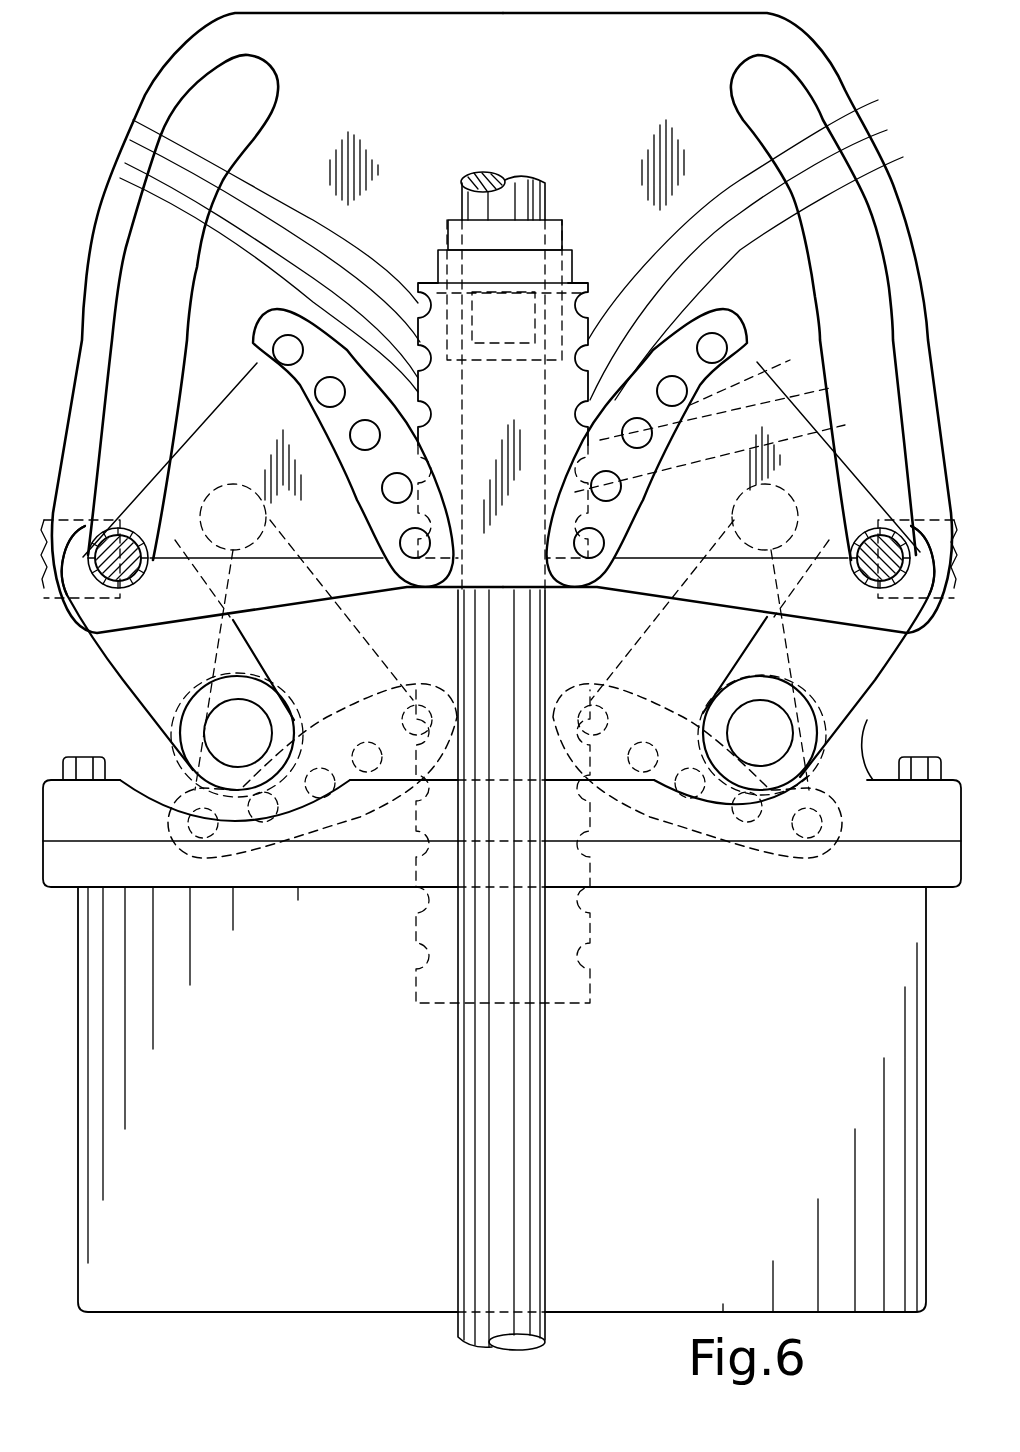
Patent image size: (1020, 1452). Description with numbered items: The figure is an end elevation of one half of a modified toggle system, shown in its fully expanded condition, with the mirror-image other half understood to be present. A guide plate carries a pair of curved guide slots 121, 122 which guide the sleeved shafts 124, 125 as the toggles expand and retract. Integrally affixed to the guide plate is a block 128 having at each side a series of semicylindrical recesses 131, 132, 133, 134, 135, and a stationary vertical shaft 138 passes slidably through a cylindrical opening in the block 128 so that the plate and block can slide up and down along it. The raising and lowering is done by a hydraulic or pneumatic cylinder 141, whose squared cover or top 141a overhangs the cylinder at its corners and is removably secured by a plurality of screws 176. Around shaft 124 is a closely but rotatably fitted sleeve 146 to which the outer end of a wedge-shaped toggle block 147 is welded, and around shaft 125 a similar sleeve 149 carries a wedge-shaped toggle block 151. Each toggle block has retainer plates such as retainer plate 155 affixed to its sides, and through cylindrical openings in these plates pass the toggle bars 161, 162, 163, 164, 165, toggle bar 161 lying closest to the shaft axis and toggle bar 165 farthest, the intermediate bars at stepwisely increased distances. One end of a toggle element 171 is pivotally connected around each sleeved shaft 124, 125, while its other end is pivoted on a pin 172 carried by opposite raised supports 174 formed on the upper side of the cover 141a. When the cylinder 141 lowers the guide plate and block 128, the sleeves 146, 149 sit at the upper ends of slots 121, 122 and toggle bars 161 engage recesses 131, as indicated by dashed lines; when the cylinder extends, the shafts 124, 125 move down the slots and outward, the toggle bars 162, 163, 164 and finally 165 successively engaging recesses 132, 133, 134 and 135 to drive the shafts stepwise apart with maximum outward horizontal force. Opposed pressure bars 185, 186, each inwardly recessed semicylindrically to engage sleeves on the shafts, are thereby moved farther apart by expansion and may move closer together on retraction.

The curved guide slot 121 is at (174, 113).
The curved guide slot 122 is at (805, 88).
The sleeved shaft 124 is at (232, 497).
The sleeved shaft 125 is at (877, 500).
The block 128 is at (130, 140).
The semicylindrical recess 131 is at (133, 120).
The semicylindrical recess 132 is at (125, 163).
The semicylindrical recess 133 is at (120, 178).
The semicylindrical recess 134 is at (430, 491).
The semicylindrical recess 135 is at (430, 541).
The vertical shaft 138 is at (546, 641).
The hydraulic or pneumatic cylinder 141 is at (252, 1314).
The cover or top 141a is at (864, 745).
The sleeve 146 is at (103, 670).
The wedge-shaped toggle block 147 is at (222, 397).
The sleeve 149 is at (885, 640).
The wedge-shaped toggle block 151 is at (765, 375).
The retainer plate 155 is at (253, 343).
The toggle bar 161 is at (275, 340).
The toggle bar 162 is at (316, 397).
The toggle bar 163 is at (681, 432).
The toggle bar 164 is at (386, 496).
The toggle bar 165 is at (400, 544).
The toggle element 171 is at (140, 700).
The pin 172 is at (203, 750).
The raised support 174 is at (163, 743).
The screw 176 is at (88, 753).
The pressure bar 185 is at (57, 612).
The pressure bar 186 is at (922, 600).